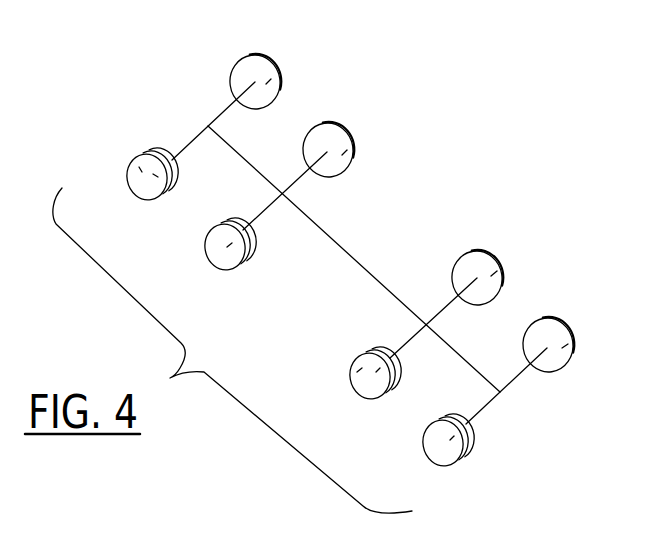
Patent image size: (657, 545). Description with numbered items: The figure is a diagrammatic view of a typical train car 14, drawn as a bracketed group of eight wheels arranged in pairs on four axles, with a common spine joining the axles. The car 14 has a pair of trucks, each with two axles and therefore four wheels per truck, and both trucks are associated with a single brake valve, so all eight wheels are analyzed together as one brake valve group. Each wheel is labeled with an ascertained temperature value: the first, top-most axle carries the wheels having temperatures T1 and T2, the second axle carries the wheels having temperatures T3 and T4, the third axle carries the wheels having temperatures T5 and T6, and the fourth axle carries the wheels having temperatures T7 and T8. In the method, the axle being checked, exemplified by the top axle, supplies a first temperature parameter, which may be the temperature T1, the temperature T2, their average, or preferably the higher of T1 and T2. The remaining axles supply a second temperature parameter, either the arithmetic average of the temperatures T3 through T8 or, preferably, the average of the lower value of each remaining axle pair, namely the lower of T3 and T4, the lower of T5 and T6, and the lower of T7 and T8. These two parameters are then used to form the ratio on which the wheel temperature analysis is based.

The car 14 is at (521, 112).
The wheel temperature T1 is at (136, 153).
The wheel temperature T2 is at (278, 71).
The wheel temperature T3 is at (204, 242).
The wheel temperature T4 is at (353, 143).
The wheel temperature T5 is at (353, 367).
The wheel temperature T6 is at (497, 272).
The wheel temperature T7 is at (424, 447).
The wheel temperature T8 is at (571, 343).